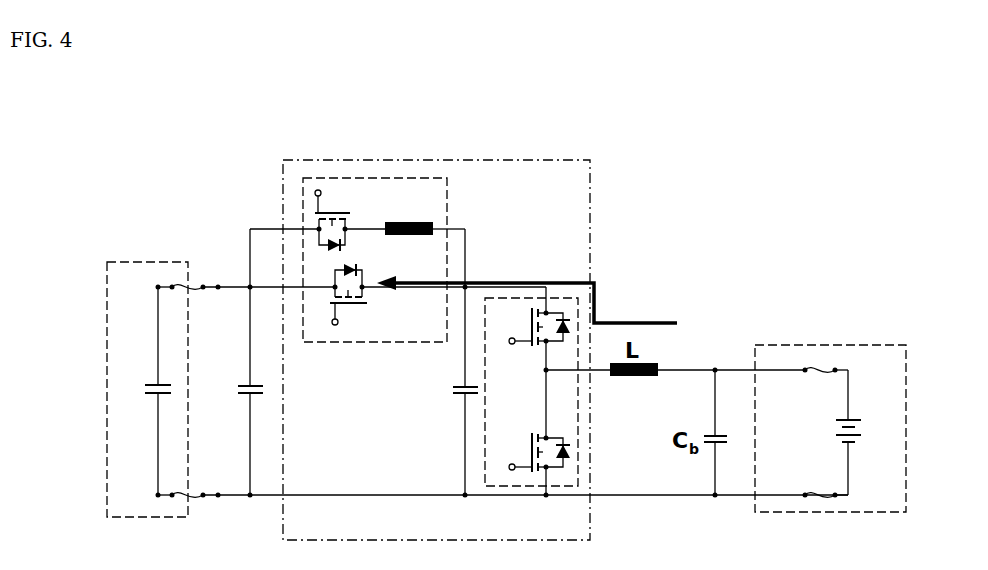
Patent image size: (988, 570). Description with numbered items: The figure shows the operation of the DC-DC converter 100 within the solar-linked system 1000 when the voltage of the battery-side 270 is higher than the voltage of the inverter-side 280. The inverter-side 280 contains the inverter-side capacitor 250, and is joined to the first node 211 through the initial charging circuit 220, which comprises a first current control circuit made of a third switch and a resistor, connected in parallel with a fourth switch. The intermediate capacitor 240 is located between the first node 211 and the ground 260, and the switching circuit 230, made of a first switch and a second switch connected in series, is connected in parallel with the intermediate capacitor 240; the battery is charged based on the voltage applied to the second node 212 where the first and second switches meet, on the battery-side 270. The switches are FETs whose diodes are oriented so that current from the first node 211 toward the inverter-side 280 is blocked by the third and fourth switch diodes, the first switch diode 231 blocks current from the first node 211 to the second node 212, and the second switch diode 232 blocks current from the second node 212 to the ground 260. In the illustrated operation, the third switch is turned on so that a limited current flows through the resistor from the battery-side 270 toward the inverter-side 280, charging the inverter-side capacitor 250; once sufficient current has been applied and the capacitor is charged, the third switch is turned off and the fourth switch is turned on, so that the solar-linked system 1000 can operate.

The DC-DC converter 100 is at (561, 160).
The solar-linked system 1000 is at (822, 130).
The first node 211 is at (473, 283).
The second node 212 is at (549, 372).
The initial charging circuit 220 is at (448, 200).
The switching circuit 230 is at (581, 373).
The first switch body diode 231 is at (568, 318).
The second switch body diode 232 is at (570, 461).
The intermediate capacitor 240 is at (462, 396).
The inverter-side capacitor 250 is at (246, 384).
The ground 260 is at (250, 497).
The battery-side 270 is at (878, 345).
The inverter-side 280 is at (161, 263).